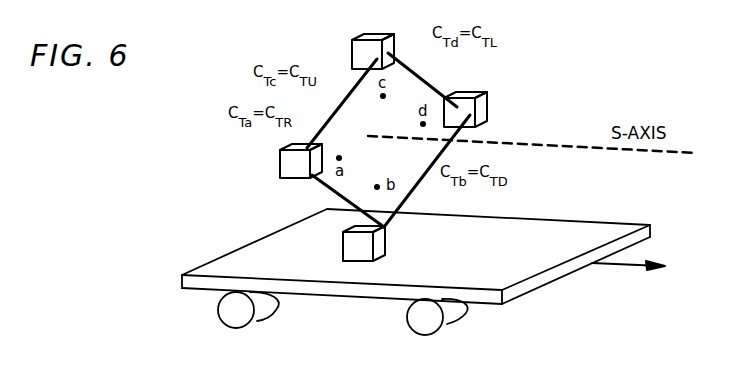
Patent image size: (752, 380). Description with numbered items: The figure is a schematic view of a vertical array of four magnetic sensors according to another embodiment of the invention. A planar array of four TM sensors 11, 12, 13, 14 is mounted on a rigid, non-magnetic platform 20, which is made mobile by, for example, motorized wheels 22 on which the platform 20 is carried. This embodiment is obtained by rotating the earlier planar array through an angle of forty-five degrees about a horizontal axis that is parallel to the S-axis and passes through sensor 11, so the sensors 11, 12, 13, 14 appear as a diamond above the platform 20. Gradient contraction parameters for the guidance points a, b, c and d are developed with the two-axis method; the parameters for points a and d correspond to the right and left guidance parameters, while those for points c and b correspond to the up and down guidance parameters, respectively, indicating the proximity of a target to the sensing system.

The magnetic sensor 11 is at (343, 245).
The magnetic sensor 12 is at (280, 162).
The magnetic sensor 13 is at (352, 53).
The magnetic sensor 14 is at (488, 110).
The platform 20 is at (588, 230).
The wheels 22 is at (232, 315).